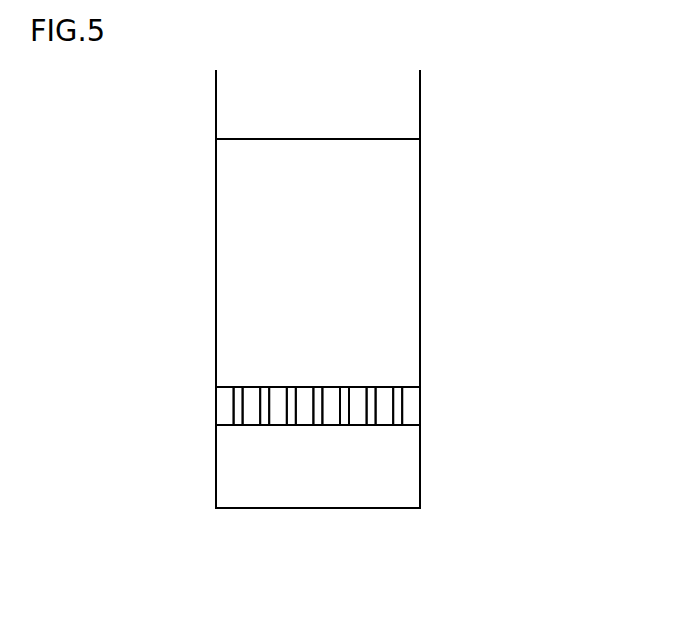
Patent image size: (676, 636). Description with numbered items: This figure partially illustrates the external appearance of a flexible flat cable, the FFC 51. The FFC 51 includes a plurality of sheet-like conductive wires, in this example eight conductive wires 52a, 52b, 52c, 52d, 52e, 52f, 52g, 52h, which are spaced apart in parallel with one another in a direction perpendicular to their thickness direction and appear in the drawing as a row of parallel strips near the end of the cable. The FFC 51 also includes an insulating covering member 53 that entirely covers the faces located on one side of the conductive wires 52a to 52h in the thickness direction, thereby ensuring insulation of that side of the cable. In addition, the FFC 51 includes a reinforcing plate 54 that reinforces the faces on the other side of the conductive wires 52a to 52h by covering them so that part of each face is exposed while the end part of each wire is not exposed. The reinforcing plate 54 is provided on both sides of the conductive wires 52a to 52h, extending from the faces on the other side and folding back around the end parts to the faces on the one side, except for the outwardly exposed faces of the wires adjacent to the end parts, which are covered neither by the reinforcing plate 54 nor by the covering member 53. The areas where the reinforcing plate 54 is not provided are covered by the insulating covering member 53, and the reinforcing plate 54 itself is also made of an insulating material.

The FFC 51 is at (528, 151).
The conductive wire 52a is at (227, 413).
The conductive wire 52b is at (253, 413).
The conductive wire 52c is at (280, 413).
The conductive wire 52d is at (306, 413).
The conductive wire 52e is at (334, 413).
The conductive wire 52f is at (361, 413).
The conductive wire 52g is at (388, 413).
The conductive wire 52h is at (414, 413).
The insulating covering member 53 is at (386, 108).
The reinforcing plate 54 is at (385, 262).